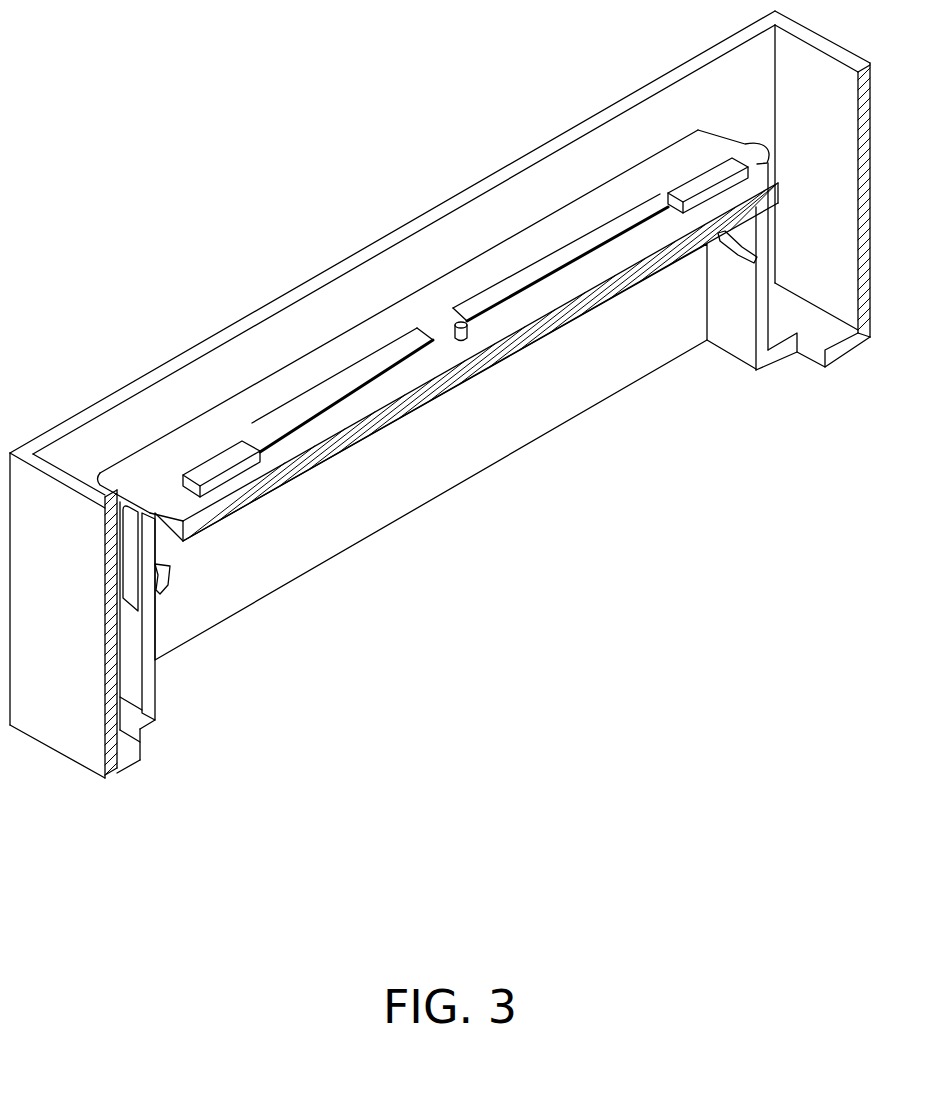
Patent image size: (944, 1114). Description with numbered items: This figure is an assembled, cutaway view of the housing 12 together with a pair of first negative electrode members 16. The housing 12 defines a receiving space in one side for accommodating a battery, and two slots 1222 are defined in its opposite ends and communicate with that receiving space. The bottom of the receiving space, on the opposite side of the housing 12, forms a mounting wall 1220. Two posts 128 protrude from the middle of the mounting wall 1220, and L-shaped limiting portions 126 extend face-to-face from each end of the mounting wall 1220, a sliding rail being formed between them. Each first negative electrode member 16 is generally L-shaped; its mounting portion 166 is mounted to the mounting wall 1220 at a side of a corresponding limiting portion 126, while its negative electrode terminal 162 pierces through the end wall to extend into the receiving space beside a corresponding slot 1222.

The housing 12 is at (240, 312).
The first negative electrode member 16 is at (505, 276).
The mounting portion 166 is at (548, 268).
The post 128 is at (458, 323).
The limiting portion 126 is at (222, 462).
The mounting wall 1220 is at (655, 173).
The slot 1222 is at (810, 347).
The negative electrode terminal 162 is at (734, 253).